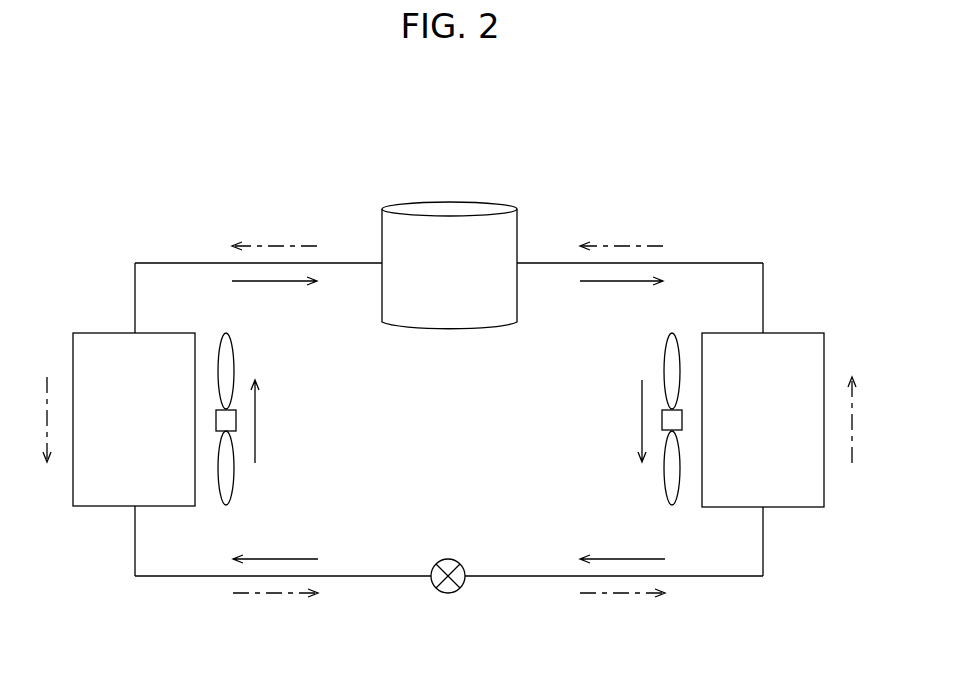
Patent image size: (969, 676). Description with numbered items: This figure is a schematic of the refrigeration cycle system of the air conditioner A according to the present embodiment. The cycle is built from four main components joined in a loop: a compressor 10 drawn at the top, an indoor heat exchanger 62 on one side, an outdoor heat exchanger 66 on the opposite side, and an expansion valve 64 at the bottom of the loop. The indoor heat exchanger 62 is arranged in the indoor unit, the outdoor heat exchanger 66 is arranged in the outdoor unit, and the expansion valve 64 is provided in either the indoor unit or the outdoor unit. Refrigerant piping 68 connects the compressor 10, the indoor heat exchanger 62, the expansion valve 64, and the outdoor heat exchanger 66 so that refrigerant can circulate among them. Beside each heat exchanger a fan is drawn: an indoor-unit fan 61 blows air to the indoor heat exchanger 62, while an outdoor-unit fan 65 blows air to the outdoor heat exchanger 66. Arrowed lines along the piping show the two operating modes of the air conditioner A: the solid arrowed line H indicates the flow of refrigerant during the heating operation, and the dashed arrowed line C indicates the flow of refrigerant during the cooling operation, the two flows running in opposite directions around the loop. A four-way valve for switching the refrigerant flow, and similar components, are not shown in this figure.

The compressor 10 is at (472, 203).
The outdoor heat exchanger 66 is at (91, 333).
The outdoor-unit fan 65 is at (236, 481).
The indoor heat exchanger 62 is at (805, 333).
The indoor-unit fan 61 is at (660, 480).
The expansion valve 64 is at (450, 559).
The refrigerant piping 68 is at (726, 263).
The air conditioner A is at (720, 151).
The arrowed line indicating refrigerant flow during cooling operation C is at (650, 247).
The arrowed line indicating refrigerant flow during heating operation H is at (601, 284).